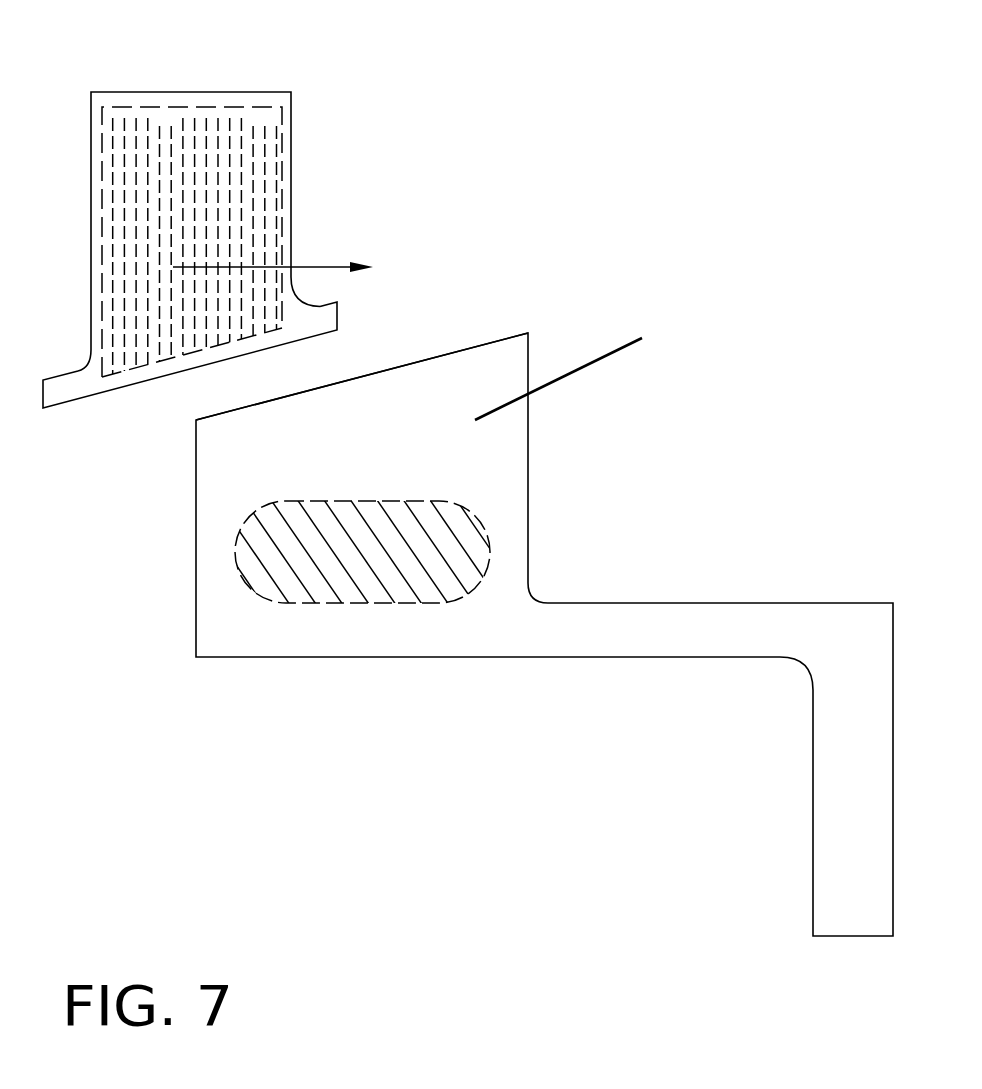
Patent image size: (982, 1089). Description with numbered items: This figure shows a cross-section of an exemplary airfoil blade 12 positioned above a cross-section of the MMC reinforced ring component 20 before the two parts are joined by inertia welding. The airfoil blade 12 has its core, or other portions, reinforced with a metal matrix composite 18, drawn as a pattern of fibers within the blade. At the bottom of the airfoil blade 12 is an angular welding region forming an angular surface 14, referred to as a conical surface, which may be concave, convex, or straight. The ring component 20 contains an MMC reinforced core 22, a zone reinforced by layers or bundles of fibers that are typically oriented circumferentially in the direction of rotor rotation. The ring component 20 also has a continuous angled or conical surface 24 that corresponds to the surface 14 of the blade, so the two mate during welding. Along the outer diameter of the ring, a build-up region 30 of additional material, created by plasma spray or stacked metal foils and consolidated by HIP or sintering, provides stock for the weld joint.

The airfoil blade 12 is at (193, 92).
The angular surface 14 is at (173, 373).
The metal matrix composite 18 is at (284, 203).
The ring component 20 is at (528, 467).
The MMC reinforced core 22 is at (325, 605).
The conical surface 24 is at (497, 336).
The build-up region 30 is at (580, 368).